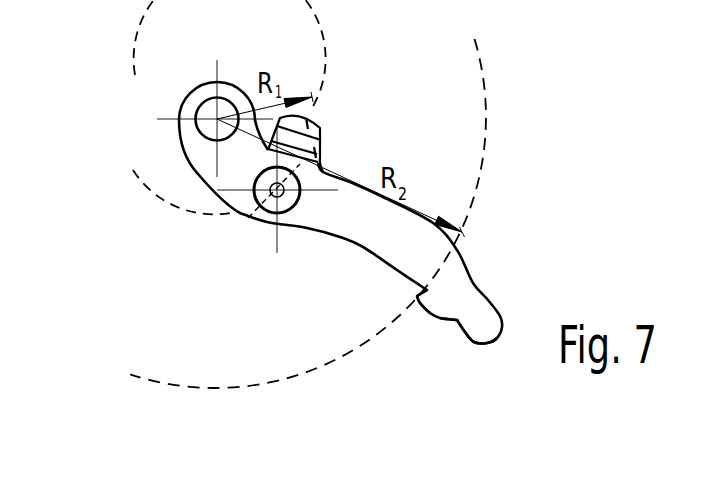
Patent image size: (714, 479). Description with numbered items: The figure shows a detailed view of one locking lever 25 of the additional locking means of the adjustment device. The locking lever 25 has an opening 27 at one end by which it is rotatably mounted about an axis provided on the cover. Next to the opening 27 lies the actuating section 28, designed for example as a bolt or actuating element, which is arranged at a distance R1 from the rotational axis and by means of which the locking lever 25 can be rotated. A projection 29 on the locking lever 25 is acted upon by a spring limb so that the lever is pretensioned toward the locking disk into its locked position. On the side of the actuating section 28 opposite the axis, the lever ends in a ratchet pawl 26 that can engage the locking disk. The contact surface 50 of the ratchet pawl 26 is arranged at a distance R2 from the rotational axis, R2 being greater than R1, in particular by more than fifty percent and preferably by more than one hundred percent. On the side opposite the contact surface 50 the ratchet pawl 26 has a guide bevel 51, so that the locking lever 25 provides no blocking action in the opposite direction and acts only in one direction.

The locking lever 25 is at (343, 228).
The ratchet pawl 26 is at (427, 302).
The opening 27 is at (217, 119).
The actuating section 28 is at (268, 200).
The projection 29 is at (307, 128).
The contact surface 50 is at (327, 364).
The guide bevel 51 is at (440, 322).